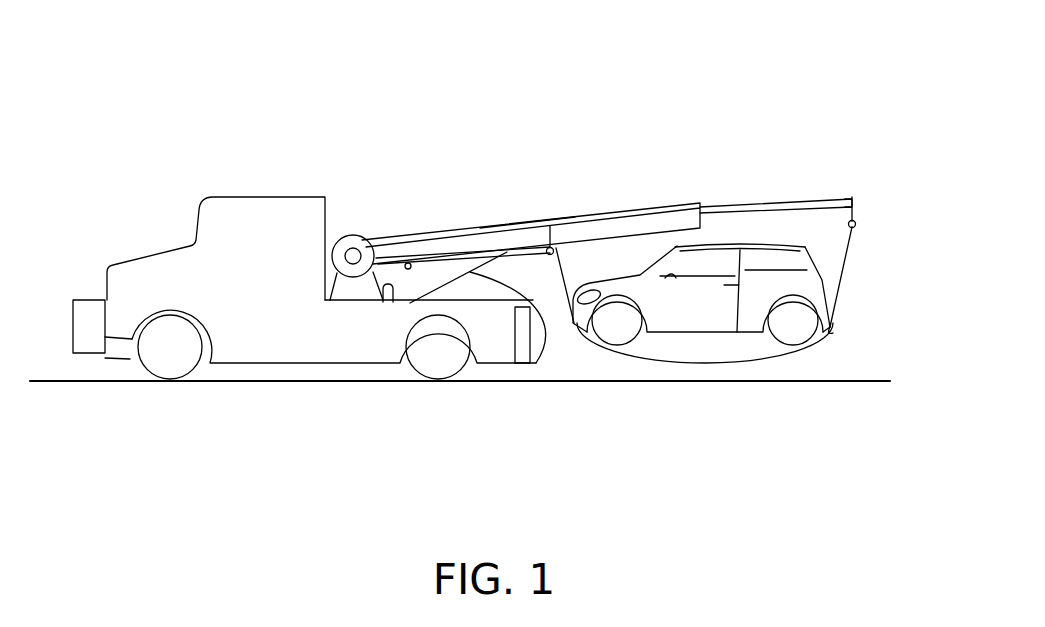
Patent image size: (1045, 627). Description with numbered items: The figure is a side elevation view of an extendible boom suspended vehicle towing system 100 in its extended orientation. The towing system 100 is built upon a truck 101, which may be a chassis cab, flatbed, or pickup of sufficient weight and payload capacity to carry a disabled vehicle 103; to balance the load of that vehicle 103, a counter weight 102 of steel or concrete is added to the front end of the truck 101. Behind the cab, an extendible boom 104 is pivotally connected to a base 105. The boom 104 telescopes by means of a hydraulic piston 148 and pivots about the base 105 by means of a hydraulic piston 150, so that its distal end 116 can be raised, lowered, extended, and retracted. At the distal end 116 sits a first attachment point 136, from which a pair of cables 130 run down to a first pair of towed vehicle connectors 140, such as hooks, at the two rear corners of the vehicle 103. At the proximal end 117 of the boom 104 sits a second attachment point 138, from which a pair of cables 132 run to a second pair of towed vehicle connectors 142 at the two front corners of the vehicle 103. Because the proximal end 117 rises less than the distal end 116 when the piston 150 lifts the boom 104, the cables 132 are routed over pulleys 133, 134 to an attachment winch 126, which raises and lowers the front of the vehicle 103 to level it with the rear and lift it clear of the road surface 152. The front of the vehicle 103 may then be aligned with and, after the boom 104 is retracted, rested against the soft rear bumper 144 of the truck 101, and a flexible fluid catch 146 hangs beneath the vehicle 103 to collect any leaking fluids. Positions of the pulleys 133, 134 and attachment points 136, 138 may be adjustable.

The extendible boom suspended vehicle towing system 100 is at (609, 90).
The truck 101 is at (241, 288).
The counter weight 102 is at (90, 298).
The disabled vehicle 103 is at (675, 316).
The extendible boom 104 is at (428, 244).
The base 105 is at (347, 234).
The distal end 116 is at (861, 189).
The proximal end 117 is at (556, 212).
The attachment winch 126 is at (385, 303).
The cables 130 is at (858, 250).
The cables 132 is at (648, 213).
The pulley 133 is at (407, 269).
The pulley 134 is at (552, 256).
The first attachment point 136 is at (856, 228).
The second attachment point 138 is at (563, 273).
The towed vehicle connectors 140 is at (841, 345).
The towed vehicle connectors 142 is at (583, 358).
The rear bumper 144 is at (517, 364).
The fluid catch 146 is at (668, 363).
The hydraulic piston 148 is at (507, 223).
The hydraulic piston 150 is at (548, 256).
The road surface 152 is at (724, 381).